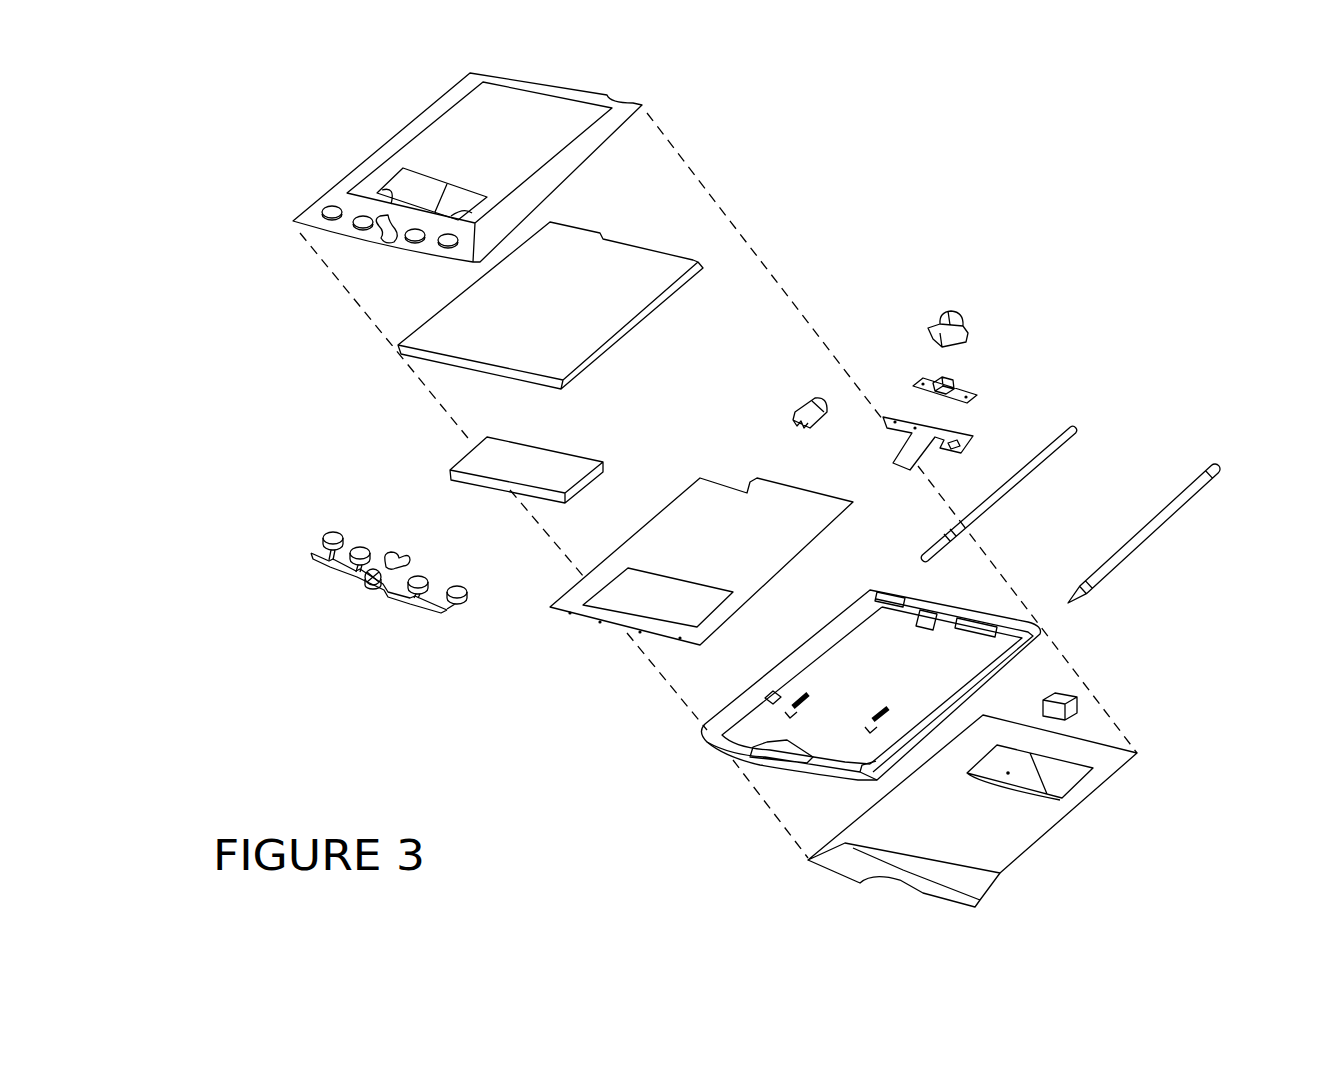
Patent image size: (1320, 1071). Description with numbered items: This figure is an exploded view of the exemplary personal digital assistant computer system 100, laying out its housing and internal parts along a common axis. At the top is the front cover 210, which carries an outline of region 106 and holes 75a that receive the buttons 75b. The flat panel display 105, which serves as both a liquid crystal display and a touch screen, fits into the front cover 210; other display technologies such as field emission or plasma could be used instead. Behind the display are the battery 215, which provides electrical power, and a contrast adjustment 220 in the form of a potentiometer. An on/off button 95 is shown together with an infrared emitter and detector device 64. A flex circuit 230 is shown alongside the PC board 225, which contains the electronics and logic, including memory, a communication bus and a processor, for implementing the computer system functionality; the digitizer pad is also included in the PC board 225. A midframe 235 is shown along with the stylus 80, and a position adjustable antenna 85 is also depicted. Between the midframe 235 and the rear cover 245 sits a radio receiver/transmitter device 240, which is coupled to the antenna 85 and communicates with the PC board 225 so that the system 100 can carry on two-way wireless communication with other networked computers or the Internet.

The personal digital assistant computer system 100 is at (163, 65).
The front cover 210 is at (657, 104).
The outline of region 106 is at (400, 187).
The holes 75a is at (322, 209).
The flat panel display 105 is at (672, 250).
The battery 215 is at (460, 452).
The buttons 75b is at (323, 532).
The PC board 225 is at (570, 582).
The contrast adjustment 220 is at (803, 401).
The on/off button 95 is at (975, 285).
The infrared emitter and detector device 64 is at (973, 387).
The flex circuit 230 is at (970, 431).
The position adjustable antenna 85 is at (1078, 424).
The stylus 80 is at (1190, 510).
The midframe 235 is at (1020, 662).
The radio receiver/transmitter device 240 is at (1082, 707).
The rear cover 245 is at (1042, 853).